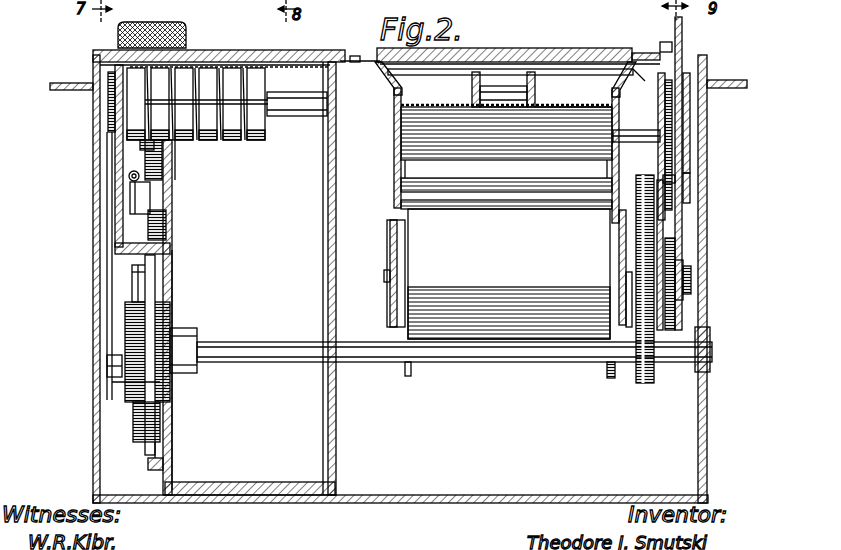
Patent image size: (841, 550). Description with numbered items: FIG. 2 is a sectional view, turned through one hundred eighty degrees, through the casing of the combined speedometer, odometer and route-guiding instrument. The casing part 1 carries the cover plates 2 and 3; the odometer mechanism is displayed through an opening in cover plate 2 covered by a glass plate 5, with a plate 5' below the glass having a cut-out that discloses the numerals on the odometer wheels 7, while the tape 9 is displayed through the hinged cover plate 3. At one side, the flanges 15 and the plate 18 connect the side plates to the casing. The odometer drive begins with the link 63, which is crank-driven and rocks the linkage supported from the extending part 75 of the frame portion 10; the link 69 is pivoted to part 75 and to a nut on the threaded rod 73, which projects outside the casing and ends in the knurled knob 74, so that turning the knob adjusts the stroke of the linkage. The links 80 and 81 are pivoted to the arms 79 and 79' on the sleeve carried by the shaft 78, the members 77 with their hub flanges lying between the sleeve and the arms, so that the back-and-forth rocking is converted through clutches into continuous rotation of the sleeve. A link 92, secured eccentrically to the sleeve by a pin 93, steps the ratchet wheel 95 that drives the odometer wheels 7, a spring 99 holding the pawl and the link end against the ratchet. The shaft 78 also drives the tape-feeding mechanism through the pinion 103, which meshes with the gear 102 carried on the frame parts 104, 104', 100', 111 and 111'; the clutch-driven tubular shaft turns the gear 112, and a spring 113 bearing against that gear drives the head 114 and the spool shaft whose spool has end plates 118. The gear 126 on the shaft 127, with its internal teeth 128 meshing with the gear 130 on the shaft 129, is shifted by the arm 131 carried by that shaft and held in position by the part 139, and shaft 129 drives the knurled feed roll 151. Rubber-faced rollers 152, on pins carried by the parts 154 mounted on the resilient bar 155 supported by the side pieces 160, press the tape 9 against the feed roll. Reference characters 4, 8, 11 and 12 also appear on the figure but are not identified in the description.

The casing part 1 is at (94, 133).
The cover plate 2 is at (304, 52).
The cover plate 3 is at (341, 54).
The plate 4 is at (280, 55).
The glass plate 5 is at (197, 83).
The plate 5' is at (297, 92).
The odometer wheels 7 is at (211, 68).
The top cover 8 is at (562, 52).
The tape 9 is at (506, 93).
The frame portion 10 is at (336, 268).
The rod 11 is at (172, 320).
The rod 12 is at (110, 220).
The flanges 15 is at (278, 482).
The plate 18 is at (337, 492).
The link 63 is at (165, 464).
The link 69 is at (152, 196).
The threaded rod 73 is at (163, 162).
The knurled knob 74 is at (119, 35).
The extending part 75 is at (167, 226).
The members 77 is at (150, 380).
The shaft 78 is at (268, 345).
The arm 79 is at (113, 355).
The arm 79' is at (192, 344).
The link 80 is at (136, 282).
The link 81 is at (160, 430).
The link 92 is at (114, 201).
The pin 93 is at (108, 365).
The ratchet wheel 95 is at (110, 108).
The spring 99 is at (130, 176).
The frame part 100' is at (506, 269).
The gear 102 is at (642, 283).
The pinion 103 is at (628, 378).
The frame part 104 is at (701, 236).
The frame part 104' is at (716, 189).
The frame part 111 is at (381, 273).
The frame part 111' is at (379, 148).
The gear 112 is at (676, 262).
The spring 113 is at (684, 276).
The head 114 is at (688, 290).
The end plates 118 is at (509, 313).
The gear 126 is at (661, 46).
The shaft 127 is at (672, 112).
The internal teeth 128 is at (703, 63).
The shaft 129 is at (690, 130).
The gear 130 is at (667, 126).
The arm 131 is at (683, 30).
The part 139 is at (690, 180).
The feed roll 151 is at (540, 132).
The rollers 152 is at (507, 90).
The parts 154 is at (592, 105).
The bar 155 is at (480, 69).
The side pieces 160 is at (392, 82).